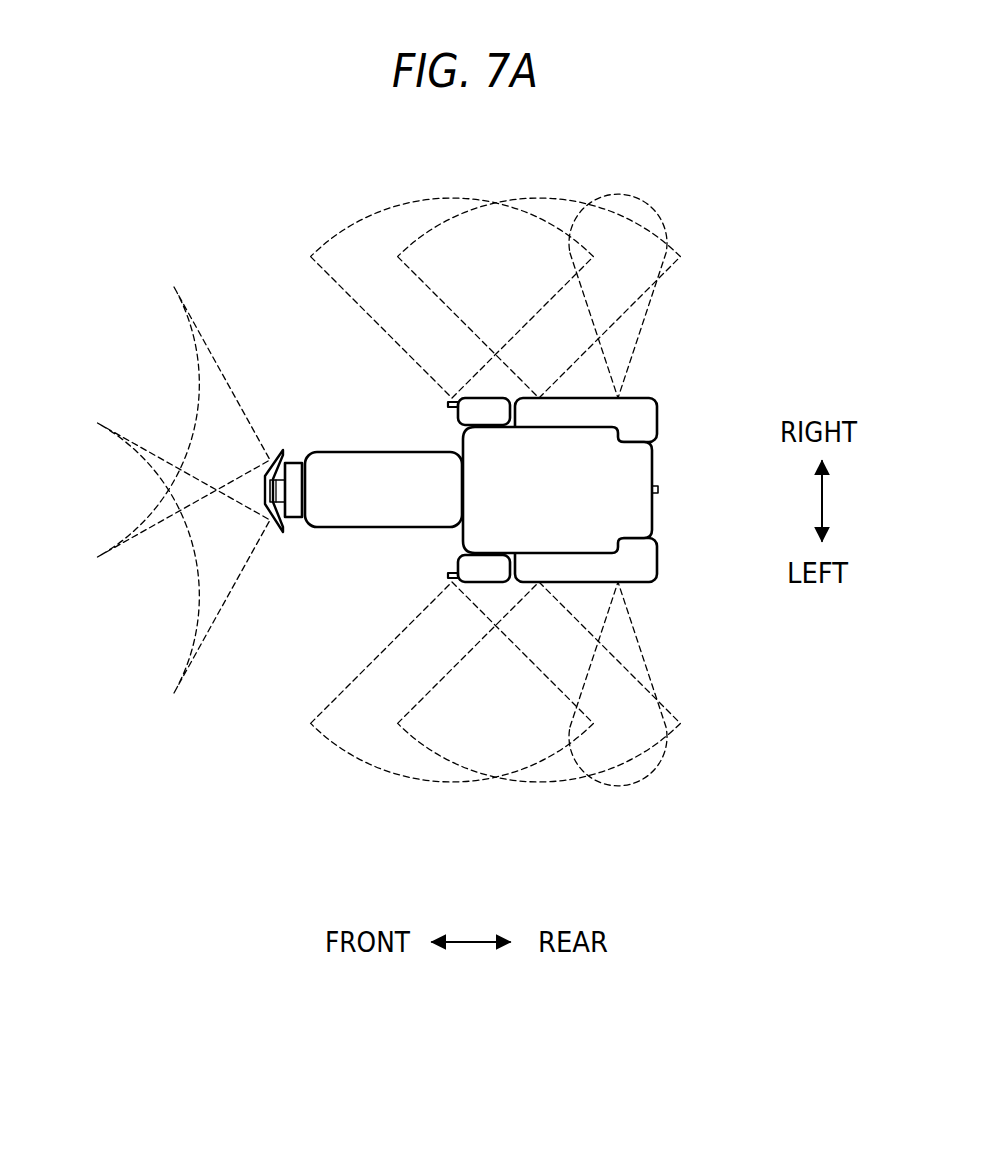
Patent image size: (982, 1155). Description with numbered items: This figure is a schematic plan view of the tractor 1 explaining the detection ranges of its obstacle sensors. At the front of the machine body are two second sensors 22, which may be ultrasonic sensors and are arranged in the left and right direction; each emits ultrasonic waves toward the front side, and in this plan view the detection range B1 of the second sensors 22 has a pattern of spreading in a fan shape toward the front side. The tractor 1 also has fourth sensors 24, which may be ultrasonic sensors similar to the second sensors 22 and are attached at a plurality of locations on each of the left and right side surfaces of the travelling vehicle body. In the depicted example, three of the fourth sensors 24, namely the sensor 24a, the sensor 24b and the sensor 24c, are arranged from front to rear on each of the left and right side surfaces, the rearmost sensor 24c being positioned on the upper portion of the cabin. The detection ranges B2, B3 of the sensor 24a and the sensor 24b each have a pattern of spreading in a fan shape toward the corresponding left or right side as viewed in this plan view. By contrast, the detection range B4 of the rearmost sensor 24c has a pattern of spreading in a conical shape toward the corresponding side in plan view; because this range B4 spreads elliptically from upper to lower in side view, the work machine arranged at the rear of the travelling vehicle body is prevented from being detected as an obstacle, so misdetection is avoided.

The tractor 1 is at (699, 338).
The second sensor 22 is at (264, 450).
The fourth sensor 24 is at (562, 494).
The sensor 24a is at (450, 395).
The sensor 24b is at (539, 397).
The rearmost sensor 24c is at (618, 398).
The detection range B1 is at (116, 344).
The detection range B2 is at (382, 209).
The detection range B3 is at (512, 199).
The detection range B4 is at (636, 196).